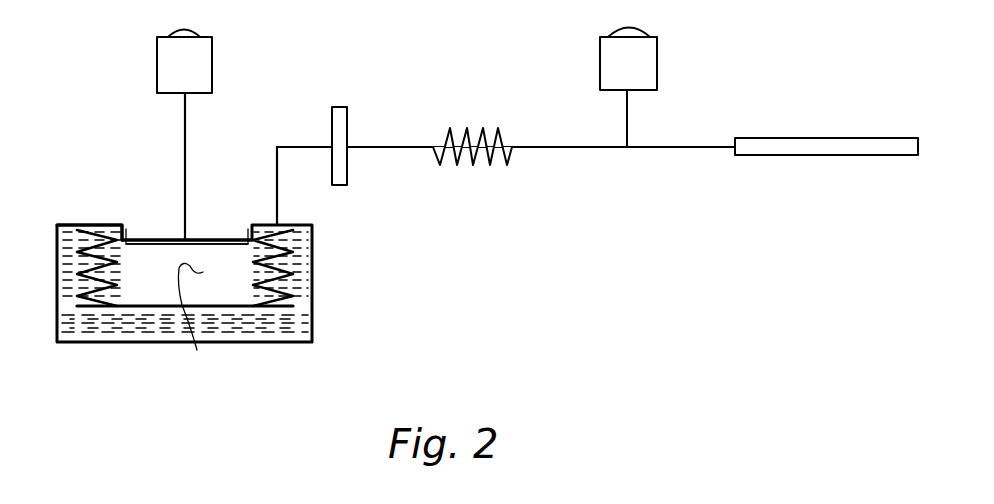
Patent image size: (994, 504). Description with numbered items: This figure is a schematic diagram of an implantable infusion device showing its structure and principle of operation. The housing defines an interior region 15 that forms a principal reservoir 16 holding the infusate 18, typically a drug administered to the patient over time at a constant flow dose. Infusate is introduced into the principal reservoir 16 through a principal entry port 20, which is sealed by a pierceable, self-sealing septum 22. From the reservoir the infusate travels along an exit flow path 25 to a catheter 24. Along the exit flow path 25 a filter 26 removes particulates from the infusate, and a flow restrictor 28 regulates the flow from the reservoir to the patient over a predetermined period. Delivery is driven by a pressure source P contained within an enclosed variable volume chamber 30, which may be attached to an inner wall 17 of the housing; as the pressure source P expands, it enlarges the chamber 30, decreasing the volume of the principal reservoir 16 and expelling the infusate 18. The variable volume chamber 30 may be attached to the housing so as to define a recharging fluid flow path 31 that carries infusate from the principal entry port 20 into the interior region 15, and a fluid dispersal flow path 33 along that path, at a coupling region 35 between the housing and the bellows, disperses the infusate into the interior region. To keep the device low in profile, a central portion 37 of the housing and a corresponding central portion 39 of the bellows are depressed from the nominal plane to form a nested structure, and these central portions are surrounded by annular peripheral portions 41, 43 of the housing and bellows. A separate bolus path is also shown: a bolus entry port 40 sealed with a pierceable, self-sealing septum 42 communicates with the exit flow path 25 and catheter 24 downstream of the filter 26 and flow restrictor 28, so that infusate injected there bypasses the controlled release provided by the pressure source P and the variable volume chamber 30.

The interior region 15 is at (298, 292).
The principal reservoir 16 is at (117, 327).
The inner wall 17 is at (303, 232).
The infusate 18 is at (268, 336).
The principal entry port 20 is at (222, 46).
The septum 22 is at (200, 72).
The catheter 24 is at (802, 138).
The exit flow path 25 is at (276, 155).
The filter 26 is at (348, 128).
The flow restrictor 28 is at (482, 130).
The variable volume chamber 30 is at (287, 270).
The recharging fluid flow path 31 is at (187, 142).
The fluid dispersal flow path 33 is at (184, 211).
The coupling region 35 is at (115, 227).
The central portion 37 is at (208, 238).
The central portion of the bellows 39 is at (168, 240).
The bolus entry port 40 is at (670, 46).
The annular peripheral portion 41 is at (268, 223).
The septum 42 is at (637, 73).
The annular peripheral portion 43 is at (103, 232).
The pressure source P is at (192, 317).